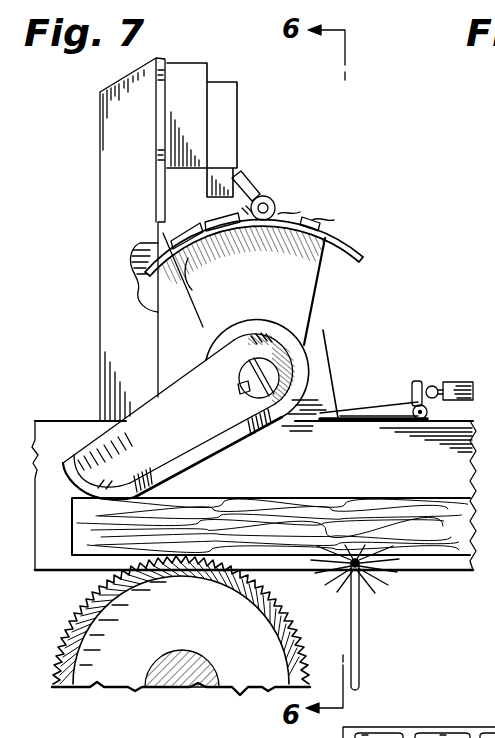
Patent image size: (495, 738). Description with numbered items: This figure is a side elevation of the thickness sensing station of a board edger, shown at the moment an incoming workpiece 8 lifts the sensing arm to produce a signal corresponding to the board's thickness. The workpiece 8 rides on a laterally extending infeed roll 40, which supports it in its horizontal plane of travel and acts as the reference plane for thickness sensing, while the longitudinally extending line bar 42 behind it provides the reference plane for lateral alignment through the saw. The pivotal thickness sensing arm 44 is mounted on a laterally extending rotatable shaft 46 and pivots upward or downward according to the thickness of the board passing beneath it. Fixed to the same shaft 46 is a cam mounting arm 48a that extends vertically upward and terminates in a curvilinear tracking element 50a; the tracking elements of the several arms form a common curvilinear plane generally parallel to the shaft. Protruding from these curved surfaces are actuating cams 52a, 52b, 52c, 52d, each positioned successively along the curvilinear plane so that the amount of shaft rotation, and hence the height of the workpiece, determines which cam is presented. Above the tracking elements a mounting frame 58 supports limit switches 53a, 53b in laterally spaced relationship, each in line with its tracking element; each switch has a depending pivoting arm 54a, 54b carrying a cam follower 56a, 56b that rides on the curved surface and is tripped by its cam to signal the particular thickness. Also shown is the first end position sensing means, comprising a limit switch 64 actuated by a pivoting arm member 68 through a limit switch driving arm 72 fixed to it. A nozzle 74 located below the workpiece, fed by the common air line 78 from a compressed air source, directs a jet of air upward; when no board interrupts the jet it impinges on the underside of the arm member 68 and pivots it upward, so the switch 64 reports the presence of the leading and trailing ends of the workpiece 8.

The mounting frame 58 is at (110, 174).
The pivoting arm 54a is at (246, 217).
The pivoting arm 54b is at (250, 190).
The cam follower 56a is at (204, 230).
The cam follower 56b is at (276, 212).
The actuating cam 52a is at (334, 220).
The actuating cam 52b is at (300, 212).
The actuating cam 52c is at (208, 281).
The actuating cam 52d is at (183, 290).
The curvilinear tracking element 50a is at (340, 246).
The cam mounting arm 48a is at (270, 282).
The rotatable shaft 46 is at (285, 363).
The thickness sensing arm 44 is at (205, 458).
The line bar 42 is at (56, 420).
The pivoting arm member 68 is at (352, 413).
The limit switch driving arm 72 is at (414, 380).
The limit switch 64 is at (460, 381).
The workpiece 8 is at (383, 498).
The nozzle 74 is at (362, 570).
The common air line 78 is at (363, 649).
The infeed roll 40 is at (67, 690).
The limit switch 53a is at (396, 737).
The limit switch 53b is at (455, 737).